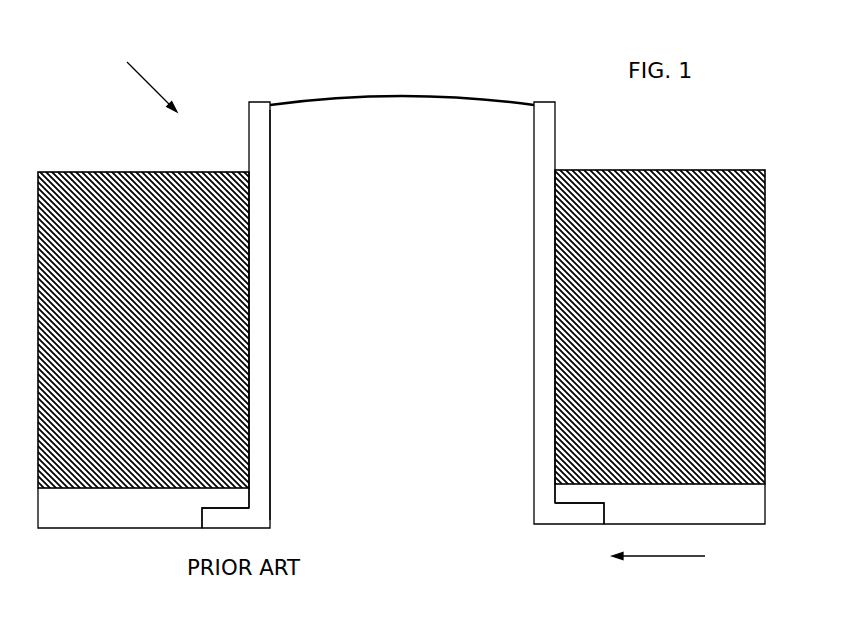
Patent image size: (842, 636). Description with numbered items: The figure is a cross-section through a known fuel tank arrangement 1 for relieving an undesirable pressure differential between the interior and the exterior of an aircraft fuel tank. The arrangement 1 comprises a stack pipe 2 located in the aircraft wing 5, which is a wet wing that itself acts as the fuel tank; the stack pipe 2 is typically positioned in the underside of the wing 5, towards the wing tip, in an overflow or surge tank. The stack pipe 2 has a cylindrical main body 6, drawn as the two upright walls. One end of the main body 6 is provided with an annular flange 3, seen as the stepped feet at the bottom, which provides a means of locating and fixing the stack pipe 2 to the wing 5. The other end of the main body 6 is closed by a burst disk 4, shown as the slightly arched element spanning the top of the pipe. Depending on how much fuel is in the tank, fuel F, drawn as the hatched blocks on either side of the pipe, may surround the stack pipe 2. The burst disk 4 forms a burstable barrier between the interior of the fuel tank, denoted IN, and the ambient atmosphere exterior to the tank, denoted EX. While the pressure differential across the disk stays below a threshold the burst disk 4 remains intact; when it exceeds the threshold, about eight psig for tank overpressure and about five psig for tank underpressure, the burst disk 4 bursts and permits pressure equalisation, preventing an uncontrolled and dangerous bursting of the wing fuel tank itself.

The fuel tank arrangement 1 is at (246, 122).
The stack pipe 2 is at (270, 369).
The annular flange 3 is at (564, 526).
The burst disk 4 is at (507, 82).
The aircraft wing 5 is at (230, 492).
The cylindrical main body 6 is at (283, 408).
The fuel F is at (652, 188).
The interior of the fuel tank IN is at (143, 73).
The ambient atmosphere exterior to the fuel tank EX is at (674, 556).